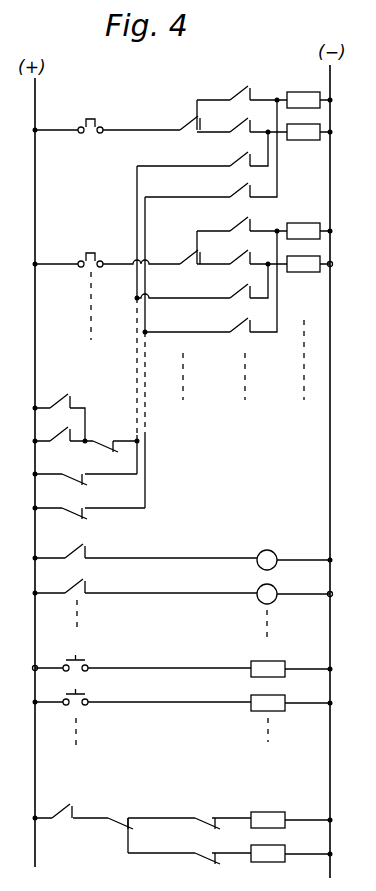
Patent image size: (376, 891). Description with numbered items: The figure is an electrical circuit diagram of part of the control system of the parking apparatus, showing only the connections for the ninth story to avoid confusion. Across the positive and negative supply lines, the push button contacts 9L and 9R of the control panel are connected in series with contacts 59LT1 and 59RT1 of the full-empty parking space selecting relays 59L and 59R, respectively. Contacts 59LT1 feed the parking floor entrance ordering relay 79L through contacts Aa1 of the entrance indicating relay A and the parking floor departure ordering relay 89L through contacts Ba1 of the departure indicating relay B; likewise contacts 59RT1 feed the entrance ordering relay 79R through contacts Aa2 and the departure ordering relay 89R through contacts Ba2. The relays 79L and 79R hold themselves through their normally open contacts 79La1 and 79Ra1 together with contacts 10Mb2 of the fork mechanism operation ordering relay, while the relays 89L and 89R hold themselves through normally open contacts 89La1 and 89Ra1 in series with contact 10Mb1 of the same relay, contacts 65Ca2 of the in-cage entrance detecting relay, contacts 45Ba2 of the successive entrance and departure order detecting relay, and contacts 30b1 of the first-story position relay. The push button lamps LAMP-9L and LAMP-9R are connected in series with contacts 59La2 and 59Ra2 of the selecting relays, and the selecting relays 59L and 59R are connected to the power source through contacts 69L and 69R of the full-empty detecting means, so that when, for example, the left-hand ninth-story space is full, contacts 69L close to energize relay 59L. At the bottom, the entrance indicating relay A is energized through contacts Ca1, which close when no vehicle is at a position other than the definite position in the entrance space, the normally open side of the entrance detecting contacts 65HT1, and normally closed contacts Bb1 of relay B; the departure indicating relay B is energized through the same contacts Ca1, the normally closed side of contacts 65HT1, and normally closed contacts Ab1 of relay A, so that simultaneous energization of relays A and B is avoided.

The push button contacts 9L is at (90, 115).
The push button contacts 9R is at (90, 247).
The full-empty parking space selecting relay contacts 59LT1 is at (174, 115).
The full-empty parking space selecting relay contacts 59RT1 is at (173, 248).
The entrance indicating relay contacts Aa1 is at (246, 83).
The departure indicating relay contacts Ba1 is at (245, 116).
The normally open contacts 89La1 is at (246, 151).
The normally open contacts 79La1 is at (246, 183).
The parking floor entrance ordering relay 79L is at (306, 97).
The parking floor departure ordering relay 89L is at (303, 141).
The entrance indicating relay contacts Aa2 is at (246, 214).
The departure indicating relay contacts Ba2 is at (245, 248).
The normally open contacts 89Ra1 is at (247, 284).
The normally open contacts 79Ra1 is at (247, 318).
The parking floor entrance ordering relay 79R is at (306, 228).
The parking floor departure ordering relay 89R is at (303, 272).
The in-cage entrance detecting relay contacts 65Ca2 is at (72, 392).
The successive entrance and departure order detecting relay contacts 45Ba2 is at (63, 426).
The first-story position relay contacts 30b1 is at (109, 438).
The fork mechanism operation ordering relay contact 10Mb1 is at (80, 469).
The fork mechanism operation ordering relay contacts 10Mb2 is at (80, 503).
The full-empty parking space selecting relay contacts 59La2 is at (91, 542).
The full-empty parking space selecting relay contacts 59Ra2 is at (91, 577).
The push button lamp LAMP-9L is at (263, 552).
The push button lamp LAMP-9R is at (263, 587).
The full-empty detecting contacts 69L is at (77, 654).
The full-empty detecting contacts 69R is at (79, 690).
The full-empty parking space selecting relay 59L is at (268, 660).
The full-empty parking space selecting relay 59R is at (268, 694).
The entrance space position contacts Ca1 is at (68, 802).
The entrance detecting contacts 65HT1 is at (107, 833).
The normally closed contacts Bb1 is at (208, 814).
The normally closed contacts Ab1 is at (207, 849).
The entrance indicating relay A is at (268, 811).
The departure indicating relay B is at (268, 845).